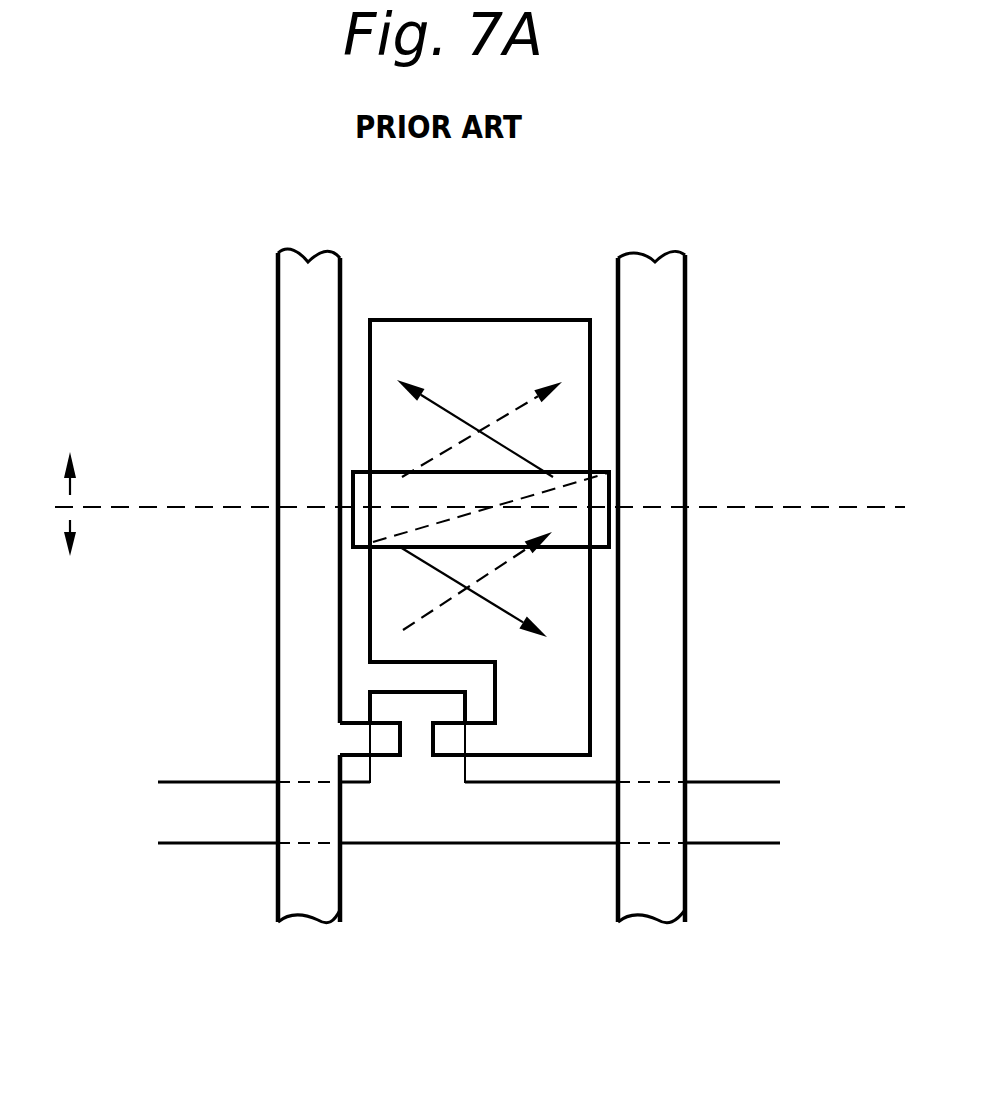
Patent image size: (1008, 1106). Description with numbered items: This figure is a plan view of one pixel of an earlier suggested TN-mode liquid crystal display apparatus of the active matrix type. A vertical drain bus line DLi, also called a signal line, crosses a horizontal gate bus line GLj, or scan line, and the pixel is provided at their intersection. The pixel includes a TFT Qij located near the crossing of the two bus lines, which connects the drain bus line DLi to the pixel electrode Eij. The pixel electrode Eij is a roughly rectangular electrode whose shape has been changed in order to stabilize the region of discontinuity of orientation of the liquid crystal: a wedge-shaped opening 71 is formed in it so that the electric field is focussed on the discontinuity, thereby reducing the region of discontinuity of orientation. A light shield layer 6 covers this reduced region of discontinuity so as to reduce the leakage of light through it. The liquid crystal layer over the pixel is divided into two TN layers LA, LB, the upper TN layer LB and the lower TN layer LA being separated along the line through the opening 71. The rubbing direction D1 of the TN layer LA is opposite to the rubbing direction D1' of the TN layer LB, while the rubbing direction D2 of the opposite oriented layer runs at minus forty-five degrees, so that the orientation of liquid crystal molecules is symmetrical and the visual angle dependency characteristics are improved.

The drain bus line DLi is at (300, 282).
The gate bus line GLj is at (170, 815).
The TFT Qij is at (418, 770).
The pixel electrode Eij is at (590, 360).
The wedge-shaped opening 71 is at (362, 525).
The light shield layer 6 is at (600, 530).
The rubbing direction D1 is at (577, 515).
The rubbing direction D2 is at (498, 421).
The rubbing direction D1' is at (568, 481).
The TN layer LB is at (71, 454).
The TN layer LA is at (71, 557).